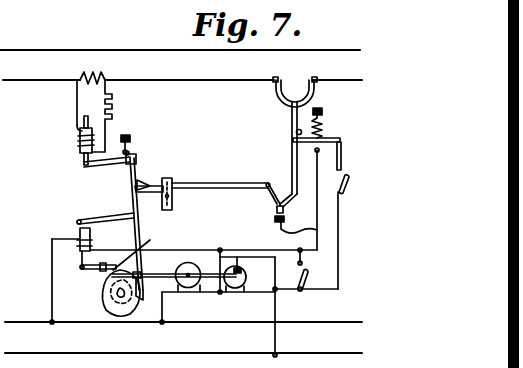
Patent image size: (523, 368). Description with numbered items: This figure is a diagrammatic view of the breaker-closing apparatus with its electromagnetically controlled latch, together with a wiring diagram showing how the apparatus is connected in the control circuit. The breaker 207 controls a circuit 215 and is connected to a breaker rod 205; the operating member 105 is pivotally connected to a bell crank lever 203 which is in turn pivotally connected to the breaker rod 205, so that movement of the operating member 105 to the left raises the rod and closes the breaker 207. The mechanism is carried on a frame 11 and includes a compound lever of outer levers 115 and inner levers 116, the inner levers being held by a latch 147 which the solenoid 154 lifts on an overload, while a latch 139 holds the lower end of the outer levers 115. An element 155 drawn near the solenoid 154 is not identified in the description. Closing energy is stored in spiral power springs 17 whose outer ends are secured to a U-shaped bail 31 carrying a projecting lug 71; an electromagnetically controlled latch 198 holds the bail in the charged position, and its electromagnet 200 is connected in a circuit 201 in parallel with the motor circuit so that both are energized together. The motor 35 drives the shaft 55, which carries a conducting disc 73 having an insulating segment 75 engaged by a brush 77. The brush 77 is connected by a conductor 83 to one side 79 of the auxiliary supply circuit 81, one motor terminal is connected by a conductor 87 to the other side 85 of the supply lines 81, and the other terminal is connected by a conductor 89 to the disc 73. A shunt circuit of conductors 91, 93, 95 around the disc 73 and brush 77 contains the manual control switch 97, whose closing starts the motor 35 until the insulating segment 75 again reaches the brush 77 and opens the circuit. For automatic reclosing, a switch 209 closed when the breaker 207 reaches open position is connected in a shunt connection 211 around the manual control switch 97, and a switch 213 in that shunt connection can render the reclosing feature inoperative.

The circuit 215 is at (105, 50).
The breaker 207 is at (286, 84).
The breaker rod 205 is at (291, 122).
The switch 209 is at (330, 139).
The switch 213 is at (349, 183).
The shunt connection 211 is at (312, 232).
The bell crank lever 203 is at (283, 205).
The operating member 105 is at (186, 183).
The frame 11 is at (170, 180).
The inner levers 116 is at (137, 176).
The outer levers 115 is at (122, 170).
The latch 147 is at (131, 156).
The solenoid 154 is at (79, 140).
The conductor 155 is at (77, 126).
The latch 139 is at (97, 220).
The electromagnet 200 is at (80, 236).
The circuit 201 is at (108, 250).
The electromagnetically controlled latch 198 is at (92, 258).
The projecting lug 71 is at (143, 249).
The spiral power springs 17 is at (104, 300).
The U-shaped bail 31 is at (140, 300).
The shaft 55 is at (156, 273).
The motor 35 is at (206, 264).
The insulating segment 75 is at (242, 272).
The brush 77 is at (239, 256).
The conducting disc 73 is at (247, 279).
The conductor 91 is at (283, 251).
The conductor 93 is at (303, 258).
The manual control switch 97 is at (309, 274).
The conductor 95 is at (290, 291).
The conductor 83 is at (277, 303).
The conductor 87 is at (163, 301).
The conductor 89 is at (212, 293).
The auxiliary supply circuit 81 is at (132, 322).
The supply line side 85 is at (219, 328).
The supply circuit side 79 is at (231, 353).